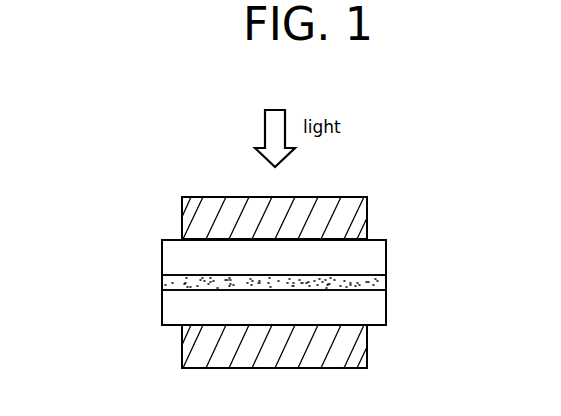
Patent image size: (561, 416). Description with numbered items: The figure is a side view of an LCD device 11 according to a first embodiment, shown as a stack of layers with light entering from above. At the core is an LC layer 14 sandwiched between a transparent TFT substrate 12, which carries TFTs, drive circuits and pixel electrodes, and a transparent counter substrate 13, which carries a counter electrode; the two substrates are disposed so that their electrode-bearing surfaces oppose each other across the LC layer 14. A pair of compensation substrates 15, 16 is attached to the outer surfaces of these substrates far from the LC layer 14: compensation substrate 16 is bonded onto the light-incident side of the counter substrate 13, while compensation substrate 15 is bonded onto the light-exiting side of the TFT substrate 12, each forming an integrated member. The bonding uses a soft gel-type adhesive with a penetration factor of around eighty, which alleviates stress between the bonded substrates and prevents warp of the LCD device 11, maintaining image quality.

The LCD device 11 is at (148, 255).
The TFT substrate 12 is at (386, 307).
The counter substrate 13 is at (386, 258).
The LC layer 14 is at (386, 282).
The compensation substrate 15 is at (367, 343).
The compensation substrate 16 is at (367, 223).